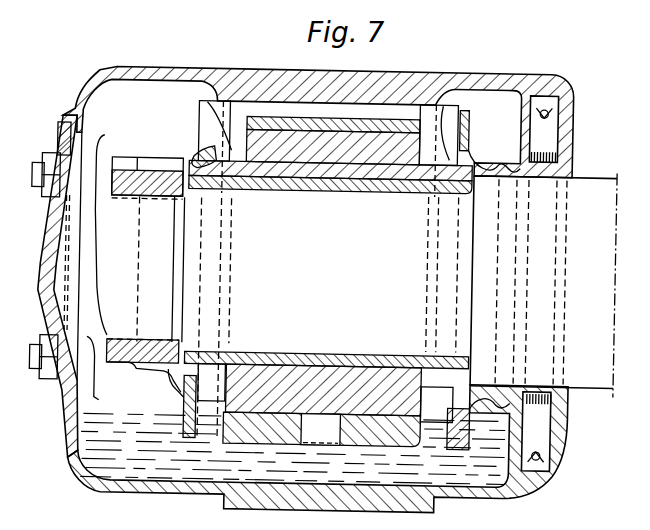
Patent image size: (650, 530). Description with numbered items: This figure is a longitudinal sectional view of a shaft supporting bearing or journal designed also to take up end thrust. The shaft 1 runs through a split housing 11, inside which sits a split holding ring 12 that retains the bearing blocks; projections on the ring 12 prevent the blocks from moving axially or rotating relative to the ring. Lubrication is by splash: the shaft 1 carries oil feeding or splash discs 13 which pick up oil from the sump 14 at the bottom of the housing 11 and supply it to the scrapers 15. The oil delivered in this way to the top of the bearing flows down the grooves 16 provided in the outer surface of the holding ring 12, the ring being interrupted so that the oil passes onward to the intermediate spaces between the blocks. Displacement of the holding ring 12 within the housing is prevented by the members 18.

The shaft 1 is at (361, 280).
The split housing 11 is at (88, 470).
The split holding ring 12 is at (200, 419).
The oil feeding or splash discs 13 is at (174, 401).
The sump 14 is at (121, 469).
The scrapers 15 is at (215, 109).
The grooves 16 is at (214, 149).
The members 18 is at (335, 438).